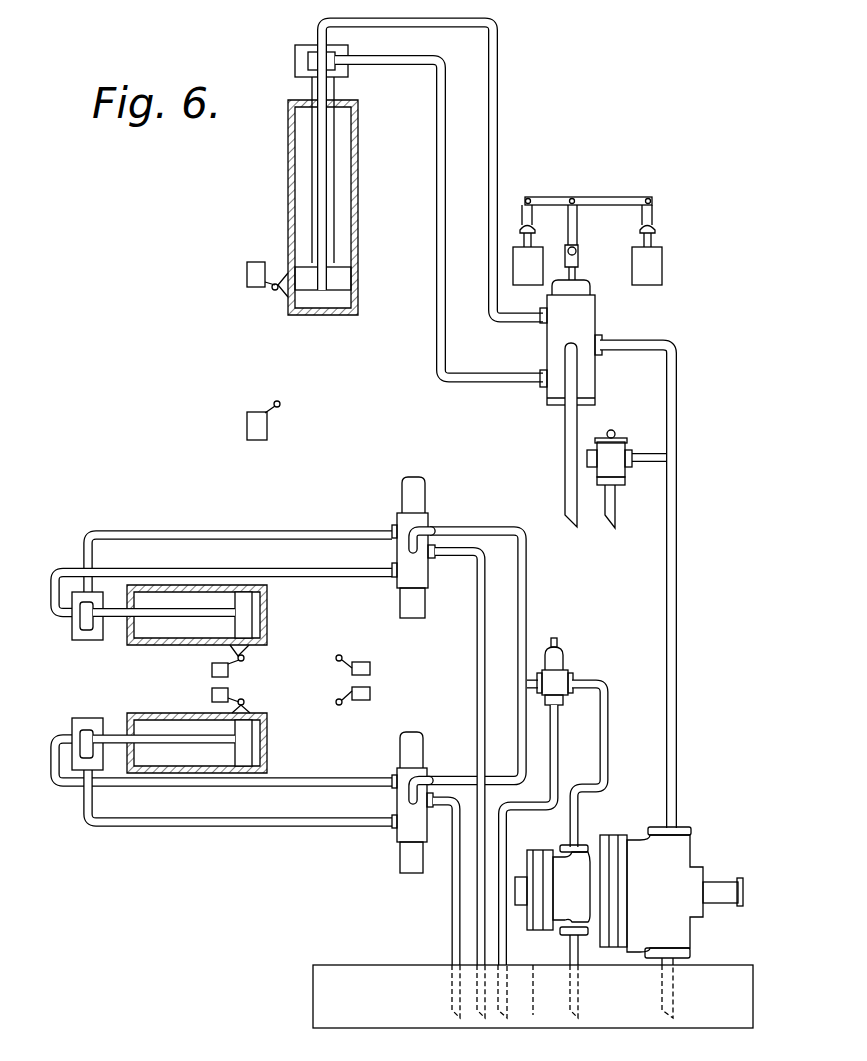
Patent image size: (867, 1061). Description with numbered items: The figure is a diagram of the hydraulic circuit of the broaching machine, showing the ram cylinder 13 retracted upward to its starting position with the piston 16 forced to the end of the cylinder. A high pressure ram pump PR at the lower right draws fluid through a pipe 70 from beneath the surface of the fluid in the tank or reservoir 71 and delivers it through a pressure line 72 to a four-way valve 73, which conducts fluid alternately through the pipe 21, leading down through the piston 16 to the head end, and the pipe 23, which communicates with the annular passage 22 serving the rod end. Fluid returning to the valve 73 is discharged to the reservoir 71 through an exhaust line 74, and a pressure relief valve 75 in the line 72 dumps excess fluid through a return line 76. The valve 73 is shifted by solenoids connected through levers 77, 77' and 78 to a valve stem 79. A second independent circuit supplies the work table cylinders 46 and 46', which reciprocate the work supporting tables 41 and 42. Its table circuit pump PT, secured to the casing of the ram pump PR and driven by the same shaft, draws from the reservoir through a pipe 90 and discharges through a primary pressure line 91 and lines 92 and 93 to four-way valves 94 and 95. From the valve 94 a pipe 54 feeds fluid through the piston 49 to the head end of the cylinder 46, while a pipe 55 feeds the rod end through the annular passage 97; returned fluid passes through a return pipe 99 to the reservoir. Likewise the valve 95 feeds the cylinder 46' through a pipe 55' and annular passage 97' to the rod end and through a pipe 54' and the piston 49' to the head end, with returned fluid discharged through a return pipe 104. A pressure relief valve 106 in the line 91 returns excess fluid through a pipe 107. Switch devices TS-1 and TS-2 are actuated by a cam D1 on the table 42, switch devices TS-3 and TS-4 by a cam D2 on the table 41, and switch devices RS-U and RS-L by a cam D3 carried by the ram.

The ram cylinder 13 is at (354, 197).
The piston 16 is at (340, 278).
The pipe 21 is at (499, 105).
The annular passage 22 is at (334, 92).
The pipe 23 is at (447, 165).
The work supporting table 41 is at (216, 574).
The work supporting table 42 is at (214, 789).
The work table cylinder 46 is at (197, 596).
The work table cylinder 46' is at (197, 763).
The piston 49 is at (245, 593).
The piston 49' is at (238, 767).
The pipe 54 is at (223, 580).
The pipe 54' is at (223, 762).
The pipe 55 is at (240, 547).
The pipe 55' is at (240, 817).
The pipe 70 is at (676, 962).
The tank or reservoir 71 is at (753, 991).
The pressure line 72 is at (678, 644).
The four-way valve 73 is at (586, 318).
The exhaust line 74 is at (565, 437).
The pressure relief valve 75 is at (614, 446).
The return line 76 is at (615, 515).
The lever 77 is at (663, 245).
The lever 77' is at (527, 228).
The lever 78 is at (596, 197).
The valve stem 79 is at (578, 271).
The pipe 90 is at (570, 945).
The primary pressure line 91 is at (608, 762).
The line 92 is at (527, 605).
The line 93 is at (495, 778).
The four-way valve 94 is at (428, 521).
The four-way valve 95 is at (426, 780).
The annular passage 97 is at (153, 594).
The annular passage 97' is at (153, 766).
The return pipe 99 is at (477, 636).
The return pipe 104 is at (452, 909).
The pressure relief valve 106 is at (565, 663).
The pipe 107 is at (558, 763).
The cam D1 is at (250, 705).
The cam D2 is at (249, 651).
The cam D3 is at (283, 296).
The switch device TS-1 is at (203, 695).
The switch device TS-2 is at (375, 696).
The switch device TS-3 is at (199, 670).
The switch device TS-4 is at (376, 666).
The switch device RS-U is at (247, 272).
The switch device RS-L is at (247, 427).
The table circuit pump PT is at (558, 855).
The ram pump PR is at (686, 855).